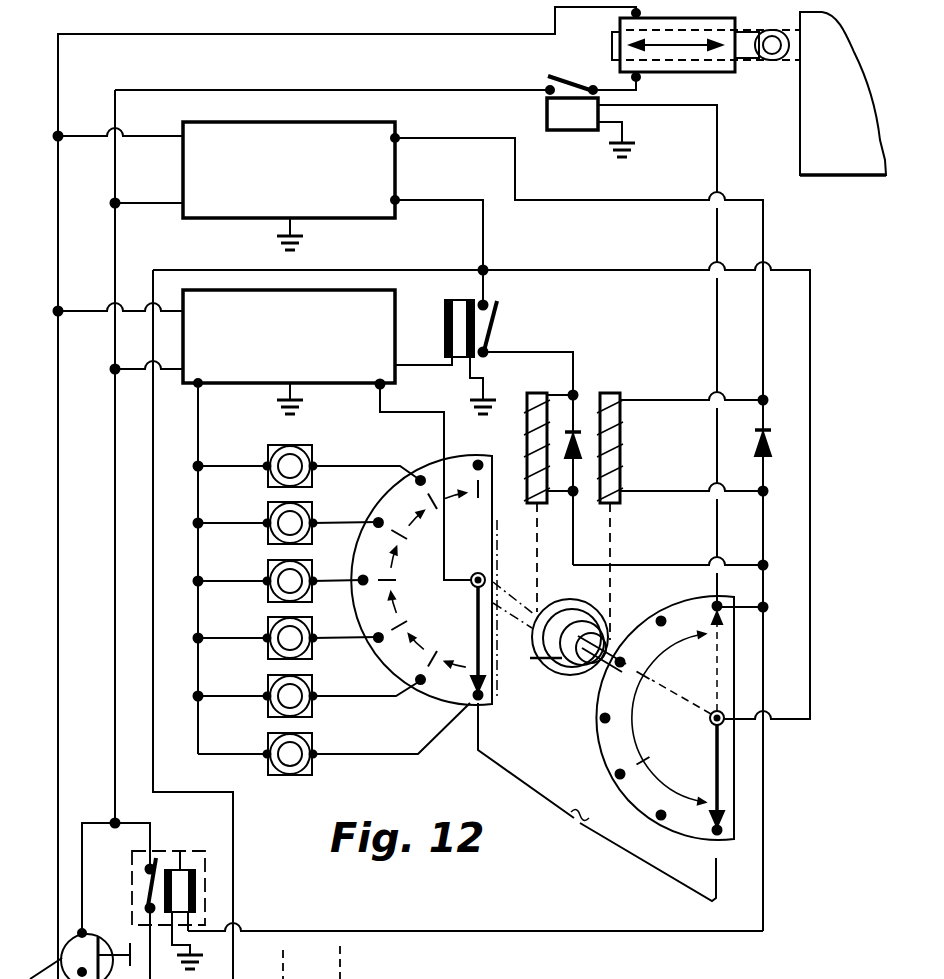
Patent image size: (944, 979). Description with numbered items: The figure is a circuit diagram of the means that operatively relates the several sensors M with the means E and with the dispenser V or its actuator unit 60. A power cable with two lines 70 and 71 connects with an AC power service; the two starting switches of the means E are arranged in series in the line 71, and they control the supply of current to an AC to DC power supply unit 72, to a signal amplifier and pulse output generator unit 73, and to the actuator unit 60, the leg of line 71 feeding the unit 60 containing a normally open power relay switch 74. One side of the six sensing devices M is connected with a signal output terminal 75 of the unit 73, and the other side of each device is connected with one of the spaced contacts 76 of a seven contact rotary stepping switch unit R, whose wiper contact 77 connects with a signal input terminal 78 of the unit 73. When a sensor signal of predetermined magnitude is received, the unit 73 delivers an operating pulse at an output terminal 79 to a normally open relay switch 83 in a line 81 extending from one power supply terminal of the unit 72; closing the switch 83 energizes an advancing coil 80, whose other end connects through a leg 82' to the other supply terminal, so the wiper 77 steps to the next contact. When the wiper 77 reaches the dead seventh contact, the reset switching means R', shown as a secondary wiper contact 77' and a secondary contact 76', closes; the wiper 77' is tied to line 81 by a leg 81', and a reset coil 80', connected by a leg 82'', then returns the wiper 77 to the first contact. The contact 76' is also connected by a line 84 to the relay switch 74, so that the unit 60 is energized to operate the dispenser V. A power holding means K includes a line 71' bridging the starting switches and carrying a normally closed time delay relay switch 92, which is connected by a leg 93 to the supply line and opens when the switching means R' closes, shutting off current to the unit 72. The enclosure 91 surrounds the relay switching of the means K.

The actuator unit 60 is at (718, 54).
The power cable line 70 is at (56, 573).
The power cable line 71 is at (311, 459).
The bridging line 71' is at (147, 892).
The AC to DC power supply unit 72 is at (380, 172).
The signal amplifier and pulse output generator unit 73 is at (396, 300).
The power relay switch 74 is at (562, 131).
The signal output terminal 75 is at (203, 388).
The spaced contacts 76 is at (408, 582).
The secondary contact 76' is at (606, 735).
The wiper contact 77 is at (455, 632).
The secondary wiper contact 77' is at (686, 719).
The signal input terminal 78 is at (380, 387).
The output terminal 79 is at (398, 362).
The advancing coil 80 is at (524, 502).
The reset coil 80' is at (684, 498).
The line 81 is at (468, 255).
The leg 81' is at (507, 490).
The leg 82' is at (668, 565).
The leg 82'' is at (581, 534).
The relay switch 83 is at (494, 318).
The line 84 is at (717, 158).
The relay enclosure 91 is at (234, 831).
The time delay relay switch 92 is at (173, 862).
The leg 93 is at (764, 849).
The sensing devices M is at (320, 450).
The power holding means K is at (226, 904).
The means E is at (54, 933).
The rotary stepping switch unit R is at (559, 648).
The reset switching means R' is at (555, 743).
The dispenser V is at (843, 93).